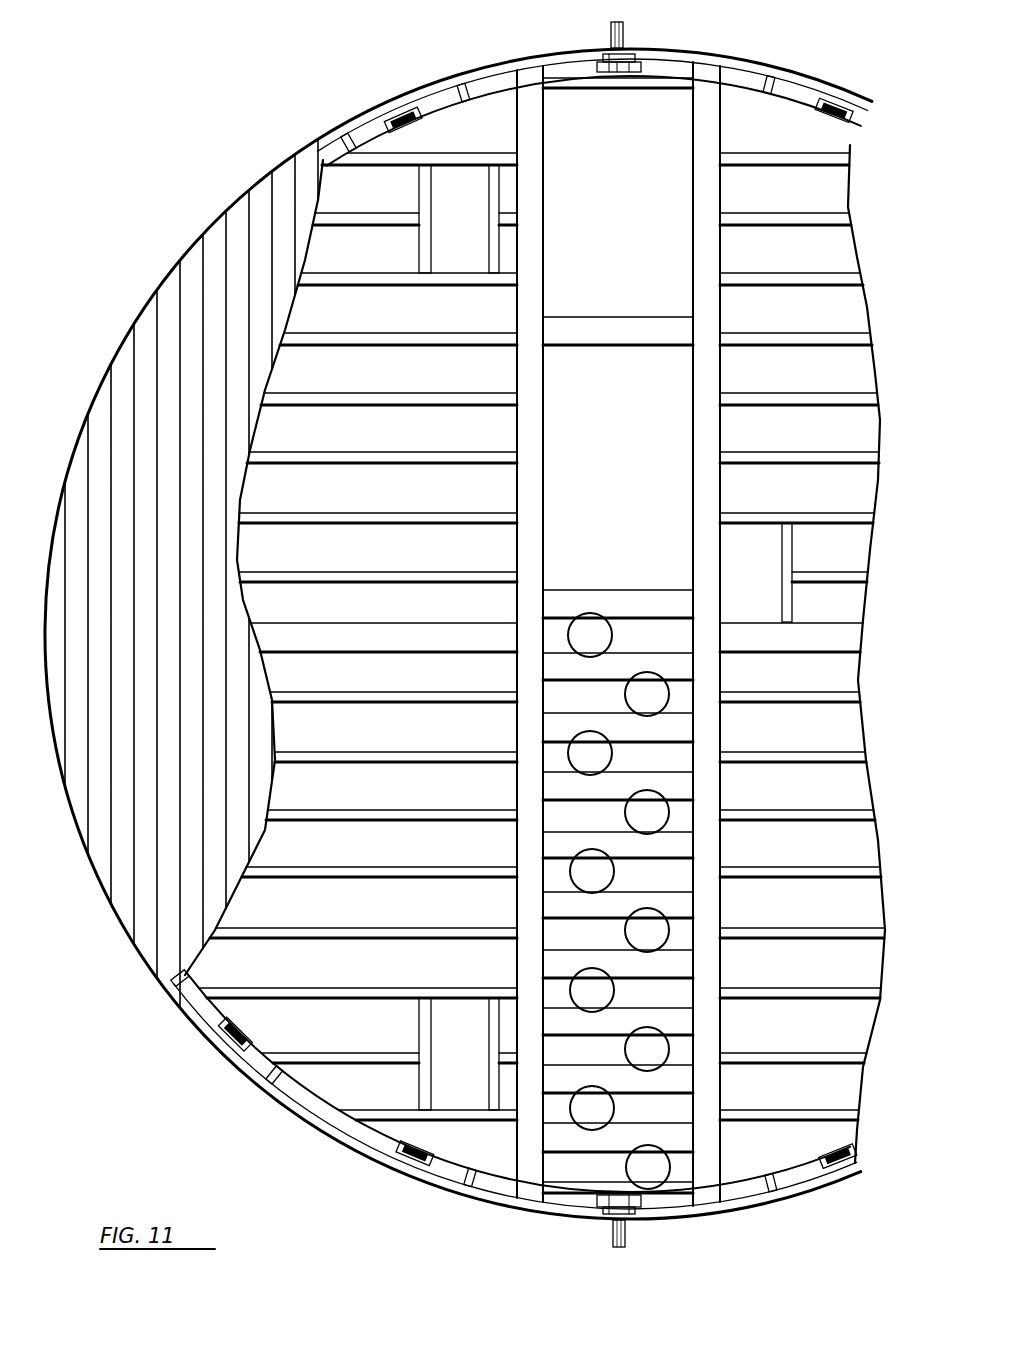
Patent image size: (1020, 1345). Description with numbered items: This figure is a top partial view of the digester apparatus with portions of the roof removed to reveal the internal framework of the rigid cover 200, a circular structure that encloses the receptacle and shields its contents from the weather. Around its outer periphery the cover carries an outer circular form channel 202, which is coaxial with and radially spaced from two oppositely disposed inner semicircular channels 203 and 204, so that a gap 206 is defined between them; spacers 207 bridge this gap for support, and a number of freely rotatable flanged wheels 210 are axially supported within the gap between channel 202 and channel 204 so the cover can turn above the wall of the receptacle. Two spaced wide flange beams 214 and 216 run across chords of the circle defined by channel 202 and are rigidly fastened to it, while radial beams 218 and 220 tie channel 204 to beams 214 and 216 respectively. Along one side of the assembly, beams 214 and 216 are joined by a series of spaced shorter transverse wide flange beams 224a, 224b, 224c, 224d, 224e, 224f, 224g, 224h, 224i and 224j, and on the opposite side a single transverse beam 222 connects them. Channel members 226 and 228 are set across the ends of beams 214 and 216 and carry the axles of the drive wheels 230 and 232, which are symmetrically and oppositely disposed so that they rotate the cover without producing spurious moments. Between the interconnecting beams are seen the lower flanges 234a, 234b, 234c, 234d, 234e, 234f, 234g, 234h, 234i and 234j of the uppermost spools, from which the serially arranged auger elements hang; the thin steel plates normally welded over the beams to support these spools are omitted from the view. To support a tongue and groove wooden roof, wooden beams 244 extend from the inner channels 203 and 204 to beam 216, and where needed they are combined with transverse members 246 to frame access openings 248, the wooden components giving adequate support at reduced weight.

The rigid cover 200 is at (148, 405).
The outer circular form channel 202 is at (562, 50).
The semicircular channel 203 is at (782, 108).
The semicircular channel 204 is at (440, 110).
The gap 206 is at (320, 152).
The spacers 207 is at (462, 88).
The flanged wheels 210 is at (392, 114).
The wide flange beam 214 is at (698, 428).
The wide flange beam 216 is at (540, 412).
The beam 218 is at (842, 645).
The beam 220 is at (360, 627).
The transverse beam 222 is at (633, 325).
The interconnecting beam 224a is at (683, 1138).
The interconnecting beam 224b is at (683, 1080).
The interconnecting beam 224c is at (683, 1022).
The interconnecting beam 224d is at (683, 965).
The interconnecting beam 224e is at (683, 905).
The interconnecting beam 224f is at (683, 845).
The interconnecting beam 224g is at (683, 787).
The interconnecting beam 224h is at (683, 727).
The interconnecting beam 224i is at (683, 667).
The interconnecting beam 224j is at (650, 595).
The channel member 226 is at (672, 1197).
The channel member 228 is at (640, 88).
The drive wheel 230 is at (612, 1210).
The drive wheel 232 is at (622, 52).
The spool lower flange 234a is at (626, 1169).
The spool lower flange 234b is at (614, 1110).
The spool lower flange 234c is at (625, 1051).
The spool lower flange 234d is at (614, 993).
The spool lower flange 234e is at (625, 934).
The spool lower flange 234f is at (614, 874).
The spool lower flange 234g is at (625, 815).
The spool lower flange 234h is at (612, 755).
The spool lower flange 234i is at (625, 697).
The spool lower flange 234j is at (612, 636).
The wooden beams 244 is at (808, 272).
The transverse members 246 is at (422, 196).
The access openings 248 is at (482, 228).